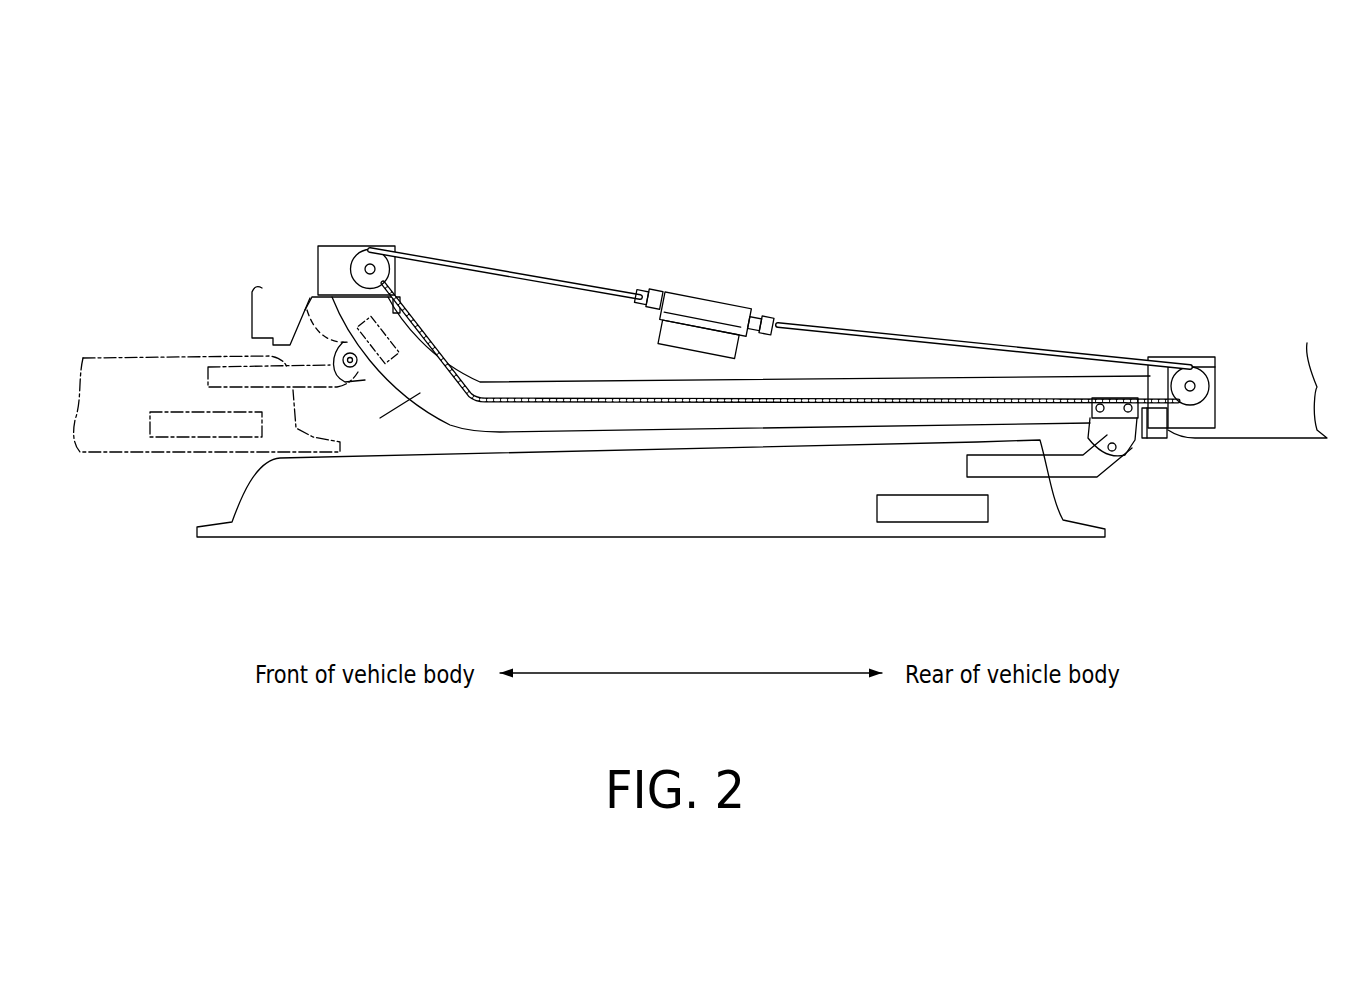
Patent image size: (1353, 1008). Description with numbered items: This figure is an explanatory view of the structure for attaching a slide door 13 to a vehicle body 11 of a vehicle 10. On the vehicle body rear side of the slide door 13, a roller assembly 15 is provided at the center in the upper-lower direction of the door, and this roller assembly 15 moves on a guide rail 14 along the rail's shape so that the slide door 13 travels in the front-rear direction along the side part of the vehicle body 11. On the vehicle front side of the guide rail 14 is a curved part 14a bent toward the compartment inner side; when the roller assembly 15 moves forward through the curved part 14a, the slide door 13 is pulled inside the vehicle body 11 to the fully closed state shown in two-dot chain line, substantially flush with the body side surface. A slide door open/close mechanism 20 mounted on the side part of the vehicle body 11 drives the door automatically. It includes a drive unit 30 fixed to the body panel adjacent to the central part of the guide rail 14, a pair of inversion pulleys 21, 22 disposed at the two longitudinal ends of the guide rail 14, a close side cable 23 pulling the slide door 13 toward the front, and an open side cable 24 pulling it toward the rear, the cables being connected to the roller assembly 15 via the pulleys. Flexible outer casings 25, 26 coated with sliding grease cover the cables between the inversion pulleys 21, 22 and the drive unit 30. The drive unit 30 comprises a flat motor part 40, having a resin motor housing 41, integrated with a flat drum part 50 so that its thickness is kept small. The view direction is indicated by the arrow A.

The vehicle 10 is at (170, 250).
The vehicle body 11 is at (1258, 388).
The slide door 13 is at (140, 370).
The guide rail 14 is at (883, 378).
The curved part 14a is at (420, 393).
The roller assembly 15 is at (303, 310).
The slide door open/close mechanism 20 is at (696, 242).
The inversion pulley 21 is at (366, 266).
The inversion pulley 22 is at (1190, 385).
The close side cable 23 is at (783, 400).
The open side cable 24 is at (1150, 425).
The outer casing 25 is at (508, 262).
The outer casing 26 is at (1010, 348).
The drive unit 30 is at (650, 287).
The motor part 40 is at (652, 347).
The motor housing 41 is at (700, 343).
The drum part 50 is at (700, 280).
The view direction A is at (729, 220).